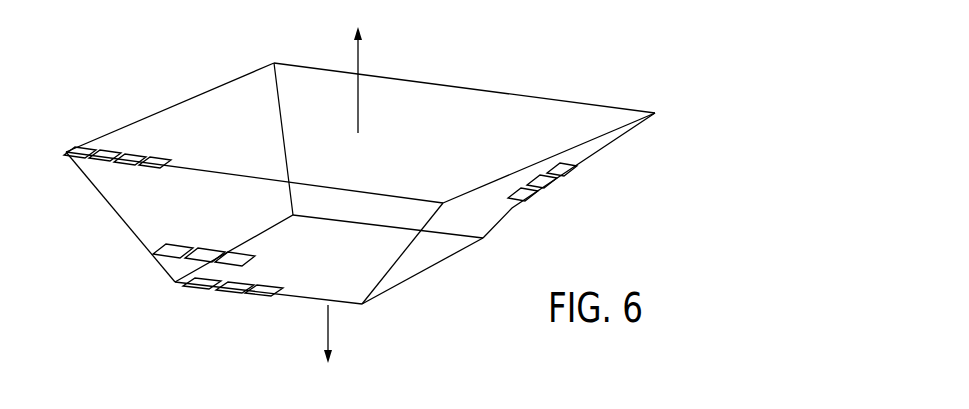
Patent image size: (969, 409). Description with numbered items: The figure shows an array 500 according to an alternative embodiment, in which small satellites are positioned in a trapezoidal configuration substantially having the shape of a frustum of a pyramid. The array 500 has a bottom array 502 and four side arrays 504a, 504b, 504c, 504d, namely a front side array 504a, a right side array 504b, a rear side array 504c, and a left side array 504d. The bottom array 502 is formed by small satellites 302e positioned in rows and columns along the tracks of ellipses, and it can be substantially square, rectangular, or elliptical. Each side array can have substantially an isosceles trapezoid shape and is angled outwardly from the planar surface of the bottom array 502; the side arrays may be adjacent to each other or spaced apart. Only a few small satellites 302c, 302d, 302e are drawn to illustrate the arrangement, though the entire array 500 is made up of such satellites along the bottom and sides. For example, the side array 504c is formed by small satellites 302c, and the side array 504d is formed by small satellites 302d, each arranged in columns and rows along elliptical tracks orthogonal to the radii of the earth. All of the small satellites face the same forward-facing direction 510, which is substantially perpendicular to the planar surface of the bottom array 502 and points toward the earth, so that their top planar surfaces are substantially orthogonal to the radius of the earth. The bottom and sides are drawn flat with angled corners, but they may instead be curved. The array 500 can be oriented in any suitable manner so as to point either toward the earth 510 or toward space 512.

The array 500 is at (100, 84).
The bottom array 502 is at (310, 279).
The front side array 504a is at (494, 106).
The right side array 504b is at (233, 100).
The rear side array 504c is at (385, 255).
The left side array 504d is at (487, 216).
The small satellites 302c is at (88, 150).
The small satellites 302d is at (574, 168).
The small satellites 302e is at (229, 288).
The forward-facing direction 510 is at (360, 54).
The space 512 is at (330, 333).